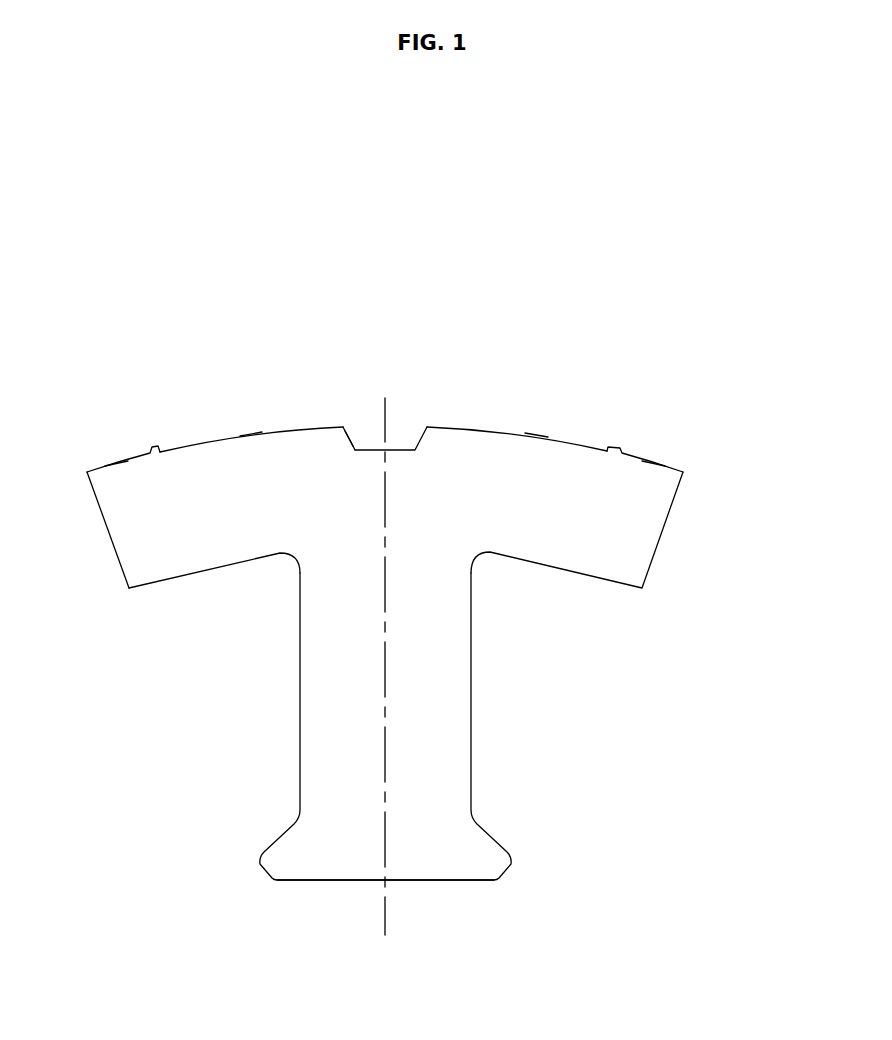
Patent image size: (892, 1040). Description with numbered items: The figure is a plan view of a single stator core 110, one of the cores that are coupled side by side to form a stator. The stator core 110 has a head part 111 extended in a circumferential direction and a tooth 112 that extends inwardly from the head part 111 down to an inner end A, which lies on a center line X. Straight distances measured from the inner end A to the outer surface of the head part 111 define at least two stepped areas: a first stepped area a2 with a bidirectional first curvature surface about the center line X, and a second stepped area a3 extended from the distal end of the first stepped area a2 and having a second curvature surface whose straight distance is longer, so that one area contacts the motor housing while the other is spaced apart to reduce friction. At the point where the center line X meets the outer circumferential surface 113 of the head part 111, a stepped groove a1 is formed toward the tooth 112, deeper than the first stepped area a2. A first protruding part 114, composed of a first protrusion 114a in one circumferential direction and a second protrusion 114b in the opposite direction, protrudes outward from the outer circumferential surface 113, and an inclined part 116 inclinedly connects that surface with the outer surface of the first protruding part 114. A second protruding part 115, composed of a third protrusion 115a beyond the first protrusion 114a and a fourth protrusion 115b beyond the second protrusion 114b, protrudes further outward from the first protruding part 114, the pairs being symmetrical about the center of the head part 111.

The stator core 110 is at (745, 580).
The head part 111 is at (637, 558).
The tooth 112 is at (452, 732).
The outer circumferential surface 113 is at (370, 452).
The first protruding part 114 is at (390, 297).
The first protrusion 114a is at (313, 435).
The second protrusion 114b is at (468, 437).
The second protruding part 115 is at (357, 180).
The third protrusion 115a is at (148, 457).
The fourth protrusion 115b is at (622, 453).
The inclined part 116 is at (348, 437).
The stepped groove a1 is at (373, 443).
The first stepped area a2 is at (251, 434).
The second stepped area a3 is at (117, 463).
The center line X is at (386, 652).
The inner end A is at (387, 880).